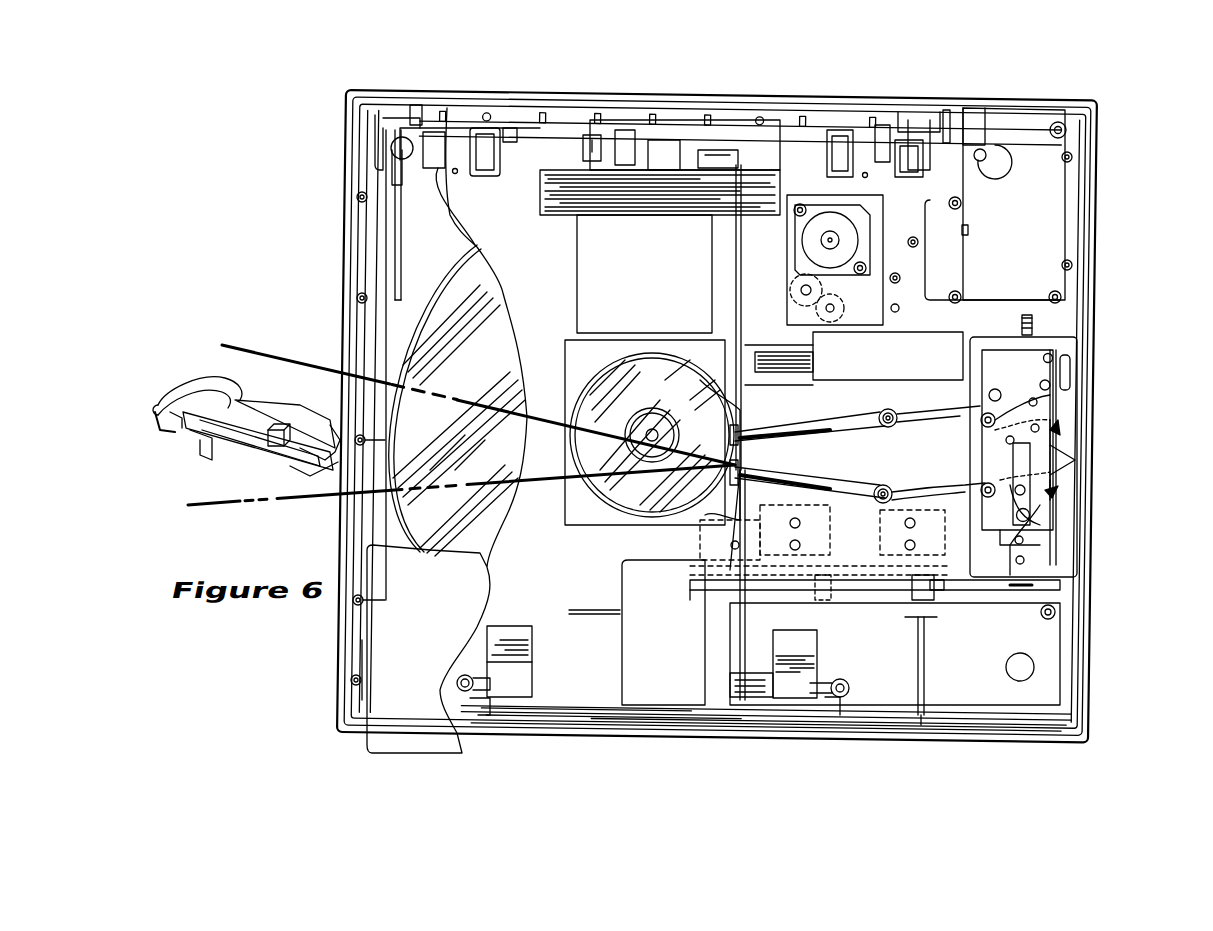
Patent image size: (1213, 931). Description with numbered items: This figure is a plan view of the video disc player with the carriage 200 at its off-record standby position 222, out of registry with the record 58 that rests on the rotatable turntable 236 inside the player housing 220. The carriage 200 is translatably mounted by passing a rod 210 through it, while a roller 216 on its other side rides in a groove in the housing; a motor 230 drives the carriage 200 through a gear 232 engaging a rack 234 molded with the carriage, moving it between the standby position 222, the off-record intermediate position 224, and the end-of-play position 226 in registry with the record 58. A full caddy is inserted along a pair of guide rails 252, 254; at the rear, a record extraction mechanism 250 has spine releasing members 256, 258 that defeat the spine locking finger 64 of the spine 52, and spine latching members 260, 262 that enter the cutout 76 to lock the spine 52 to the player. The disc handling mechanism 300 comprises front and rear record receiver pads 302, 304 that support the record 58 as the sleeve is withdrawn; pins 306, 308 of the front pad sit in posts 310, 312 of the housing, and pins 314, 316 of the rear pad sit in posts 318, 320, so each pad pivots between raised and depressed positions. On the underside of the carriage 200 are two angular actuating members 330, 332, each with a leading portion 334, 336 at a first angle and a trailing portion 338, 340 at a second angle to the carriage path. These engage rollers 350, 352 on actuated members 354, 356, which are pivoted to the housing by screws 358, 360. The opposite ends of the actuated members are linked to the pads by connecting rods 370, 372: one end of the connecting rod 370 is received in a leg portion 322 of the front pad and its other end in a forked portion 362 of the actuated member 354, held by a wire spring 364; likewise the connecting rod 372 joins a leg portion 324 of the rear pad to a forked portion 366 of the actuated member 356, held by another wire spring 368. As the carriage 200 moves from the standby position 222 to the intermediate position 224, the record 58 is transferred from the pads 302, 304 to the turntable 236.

The spine 52 is at (384, 296).
The record 58 is at (375, 496).
The spine locking finger 64 is at (390, 208).
The cutout 76 is at (448, 150).
The carriage 200 is at (1030, 379).
The rod 210 is at (785, 360).
The roller 216 is at (1020, 592).
The player housing 220 is at (580, 557).
The standby position 222 is at (912, 625).
The intermediate position 224 is at (835, 598).
The end-of-play position 226 is at (692, 595).
The motor 230 is at (800, 245).
The gear 232 is at (845, 312).
The rack 234 is at (1034, 320).
The turntable 236 is at (578, 355).
The record extraction mechanism 250 is at (603, 125).
The guide rail 252 is at (356, 667).
The guide rail 254 is at (925, 715).
The spine releasing member 256 is at (380, 153).
The spine releasing member 258 is at (940, 168).
The spine latching member 260 is at (440, 172).
The spine latching member 262 is at (882, 162).
The disc handling mechanism 300 is at (857, 455).
The front record receiver pad 302 is at (530, 640).
The rear record receiver pad 304 is at (572, 205).
The pin 306 is at (475, 712).
The pin 308 is at (835, 712).
The post 310 is at (458, 682).
The post 312 is at (848, 686).
The pin 314 is at (542, 134).
The pin 316 is at (750, 135).
The post 318 is at (510, 132).
The post 320 is at (802, 140).
The leg portion 322 is at (740, 684).
The leg portion 324 is at (710, 170).
The actuating member 330 is at (1060, 490).
The actuating member 332 is at (1060, 440).
The leading portion 334 is at (1052, 472).
The leading portion 336 is at (1072, 458).
The trailing portion 338 is at (1040, 515).
The trailing portion 340 is at (1052, 427).
The roller 350 is at (1040, 532).
The roller 352 is at (1050, 400).
The actuated member 354 is at (948, 470).
The actuated member 356 is at (945, 418).
The screw 358 is at (880, 502).
The screw 360 is at (888, 410).
The forked portion 362 is at (735, 500).
The wire spring 364 is at (758, 485).
The forked portion 366 is at (680, 410).
The wire spring 368 is at (805, 430).
The connecting rod 370 is at (720, 660).
The connecting rod 372 is at (736, 284).